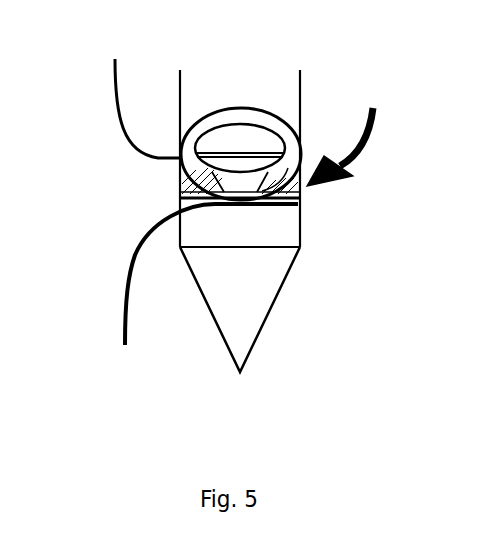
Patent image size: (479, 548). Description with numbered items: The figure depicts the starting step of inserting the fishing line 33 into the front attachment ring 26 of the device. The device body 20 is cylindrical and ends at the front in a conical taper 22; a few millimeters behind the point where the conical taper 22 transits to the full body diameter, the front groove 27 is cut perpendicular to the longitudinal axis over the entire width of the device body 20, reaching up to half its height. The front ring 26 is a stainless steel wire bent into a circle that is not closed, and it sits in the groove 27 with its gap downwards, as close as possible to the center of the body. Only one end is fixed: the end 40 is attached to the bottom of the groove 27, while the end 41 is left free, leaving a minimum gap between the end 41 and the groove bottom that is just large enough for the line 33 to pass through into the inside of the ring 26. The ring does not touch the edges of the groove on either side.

The device body 20 is at (238, 84).
The conical taper 22 is at (240, 307).
The front ring 26 is at (285, 128).
The front groove 27 is at (240, 178).
The fishing line 33 is at (127, 265).
The end of the attachment ring 40 is at (190, 182).
The end of the attachment ring 41 is at (293, 189).